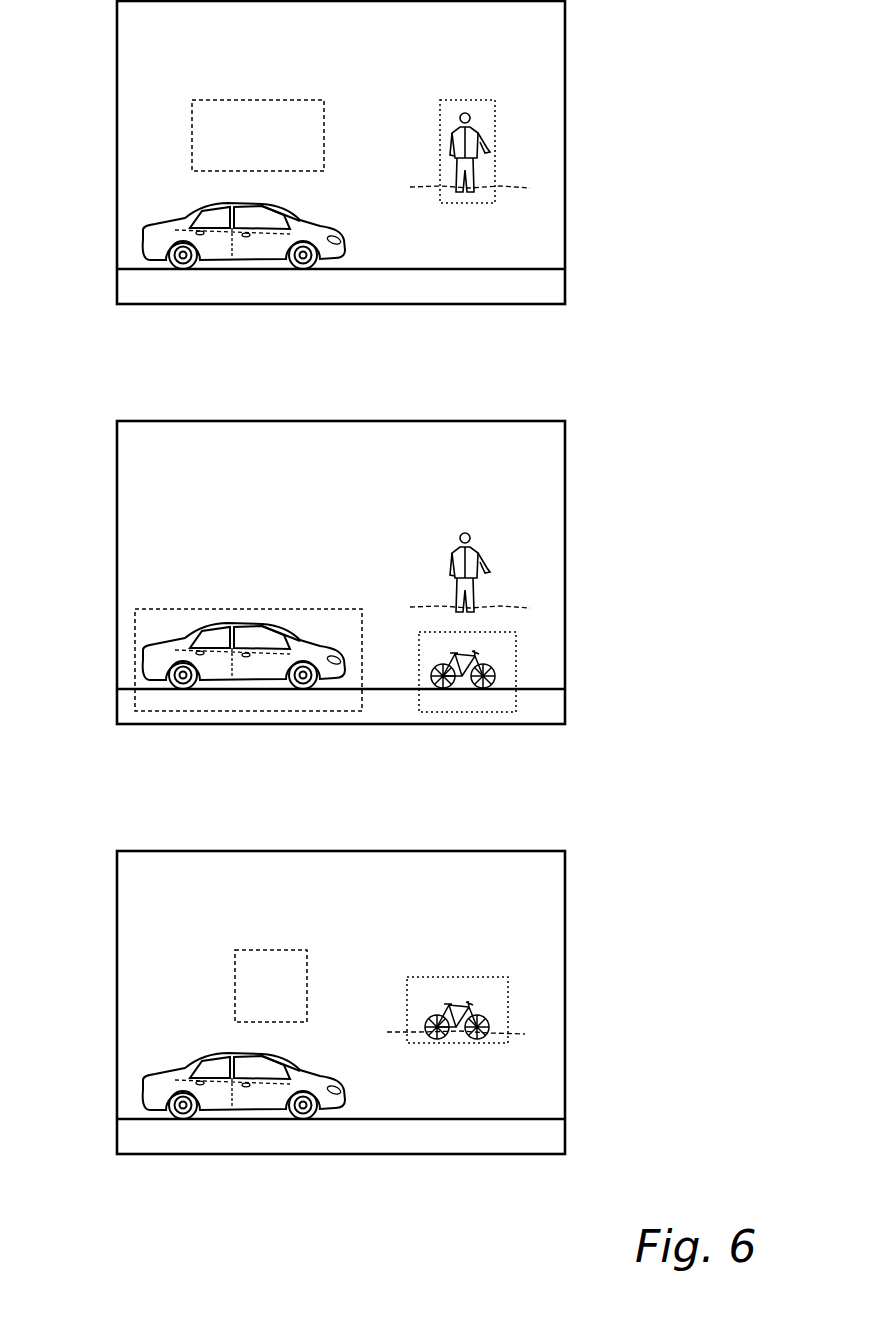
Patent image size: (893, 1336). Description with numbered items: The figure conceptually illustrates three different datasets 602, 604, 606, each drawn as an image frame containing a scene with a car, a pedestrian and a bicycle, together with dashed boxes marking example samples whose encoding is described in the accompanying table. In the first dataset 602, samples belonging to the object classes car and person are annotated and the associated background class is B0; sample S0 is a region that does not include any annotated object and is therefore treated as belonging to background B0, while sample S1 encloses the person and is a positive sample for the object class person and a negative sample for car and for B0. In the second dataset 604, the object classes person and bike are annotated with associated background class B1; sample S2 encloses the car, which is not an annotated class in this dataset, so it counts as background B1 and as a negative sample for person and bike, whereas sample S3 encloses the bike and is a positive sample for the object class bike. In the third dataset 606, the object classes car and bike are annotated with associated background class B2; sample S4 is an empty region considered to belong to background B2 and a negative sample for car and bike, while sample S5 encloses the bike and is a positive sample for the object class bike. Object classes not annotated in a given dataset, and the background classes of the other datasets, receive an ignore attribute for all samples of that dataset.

The dataset 602 is at (343, 152).
The dataset 604 is at (347, 572).
The dataset 606 is at (374, 976).
The sample S0 is at (192, 128).
The sample S1 is at (495, 133).
The sample S2 is at (158, 609).
The sample S3 is at (496, 632).
The sample S4 is at (260, 949).
The sample S5 is at (458, 977).